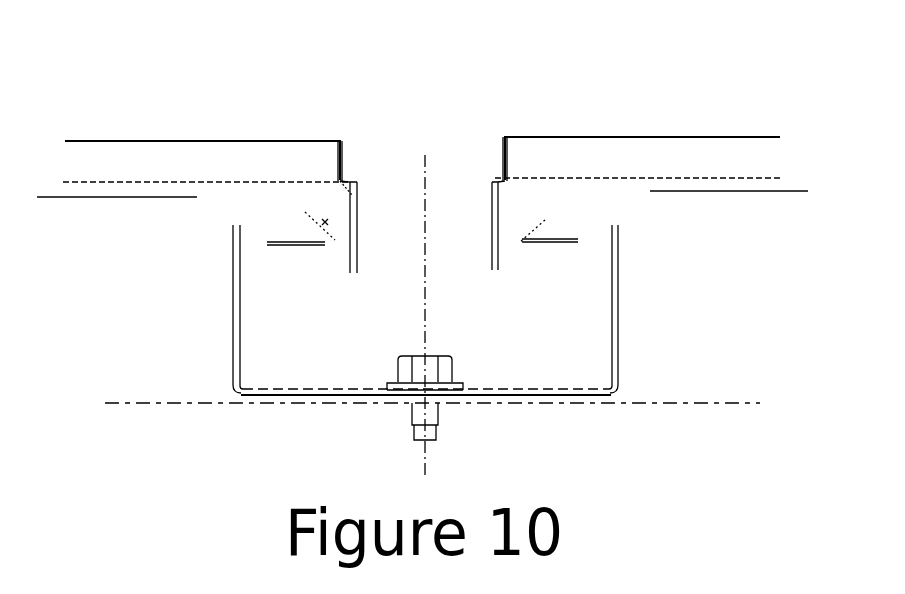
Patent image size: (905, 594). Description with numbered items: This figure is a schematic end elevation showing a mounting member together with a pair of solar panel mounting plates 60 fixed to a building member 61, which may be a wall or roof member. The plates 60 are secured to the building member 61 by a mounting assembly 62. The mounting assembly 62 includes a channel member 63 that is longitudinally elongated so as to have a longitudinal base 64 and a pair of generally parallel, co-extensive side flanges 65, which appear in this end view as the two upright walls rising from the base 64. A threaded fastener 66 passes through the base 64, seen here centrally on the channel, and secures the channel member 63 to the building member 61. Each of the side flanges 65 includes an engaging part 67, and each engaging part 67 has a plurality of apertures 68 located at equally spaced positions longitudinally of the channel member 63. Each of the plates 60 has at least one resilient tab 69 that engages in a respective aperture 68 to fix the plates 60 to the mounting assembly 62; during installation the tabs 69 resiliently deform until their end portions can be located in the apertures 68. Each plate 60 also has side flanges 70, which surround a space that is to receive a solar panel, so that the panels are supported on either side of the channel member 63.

The solar panel mounting plate 60 is at (346, 88).
The building member 61 is at (553, 246).
The mounting assembly 62 is at (705, 332).
The channel member 63 is at (414, 310).
The longitudinal base 64 is at (525, 368).
The side flange 65 is at (232, 283).
The threaded fastener 66 is at (437, 440).
The engaging part 67 is at (309, 246).
The aperture 68 is at (318, 218).
The resilient tab 69 is at (357, 198).
The side flange 70 is at (146, 141).